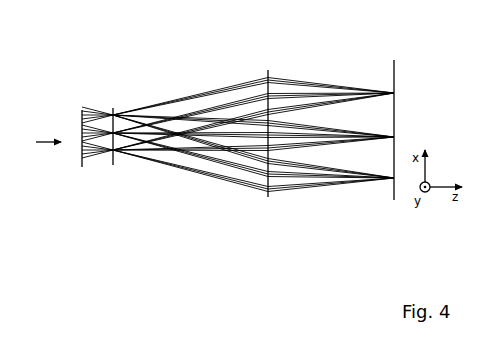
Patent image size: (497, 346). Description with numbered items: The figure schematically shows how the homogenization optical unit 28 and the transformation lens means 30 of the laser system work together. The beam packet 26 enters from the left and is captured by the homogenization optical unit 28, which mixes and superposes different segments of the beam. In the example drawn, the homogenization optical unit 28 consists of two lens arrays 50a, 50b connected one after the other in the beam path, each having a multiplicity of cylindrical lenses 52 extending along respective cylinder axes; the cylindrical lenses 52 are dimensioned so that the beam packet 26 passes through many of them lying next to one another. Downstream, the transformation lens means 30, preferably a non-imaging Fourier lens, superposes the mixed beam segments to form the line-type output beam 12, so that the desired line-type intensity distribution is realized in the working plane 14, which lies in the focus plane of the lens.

The output beam 12 is at (336, 69).
The working plane 14 is at (394, 62).
The beam packet 26 is at (43, 142).
The homogenization optical unit 28 is at (97, 86).
The transformation lens means 30 is at (268, 70).
The lens array 50a is at (82, 167).
The lens array 50b is at (113, 165).
The cylindrical lens 52 is at (82, 112).